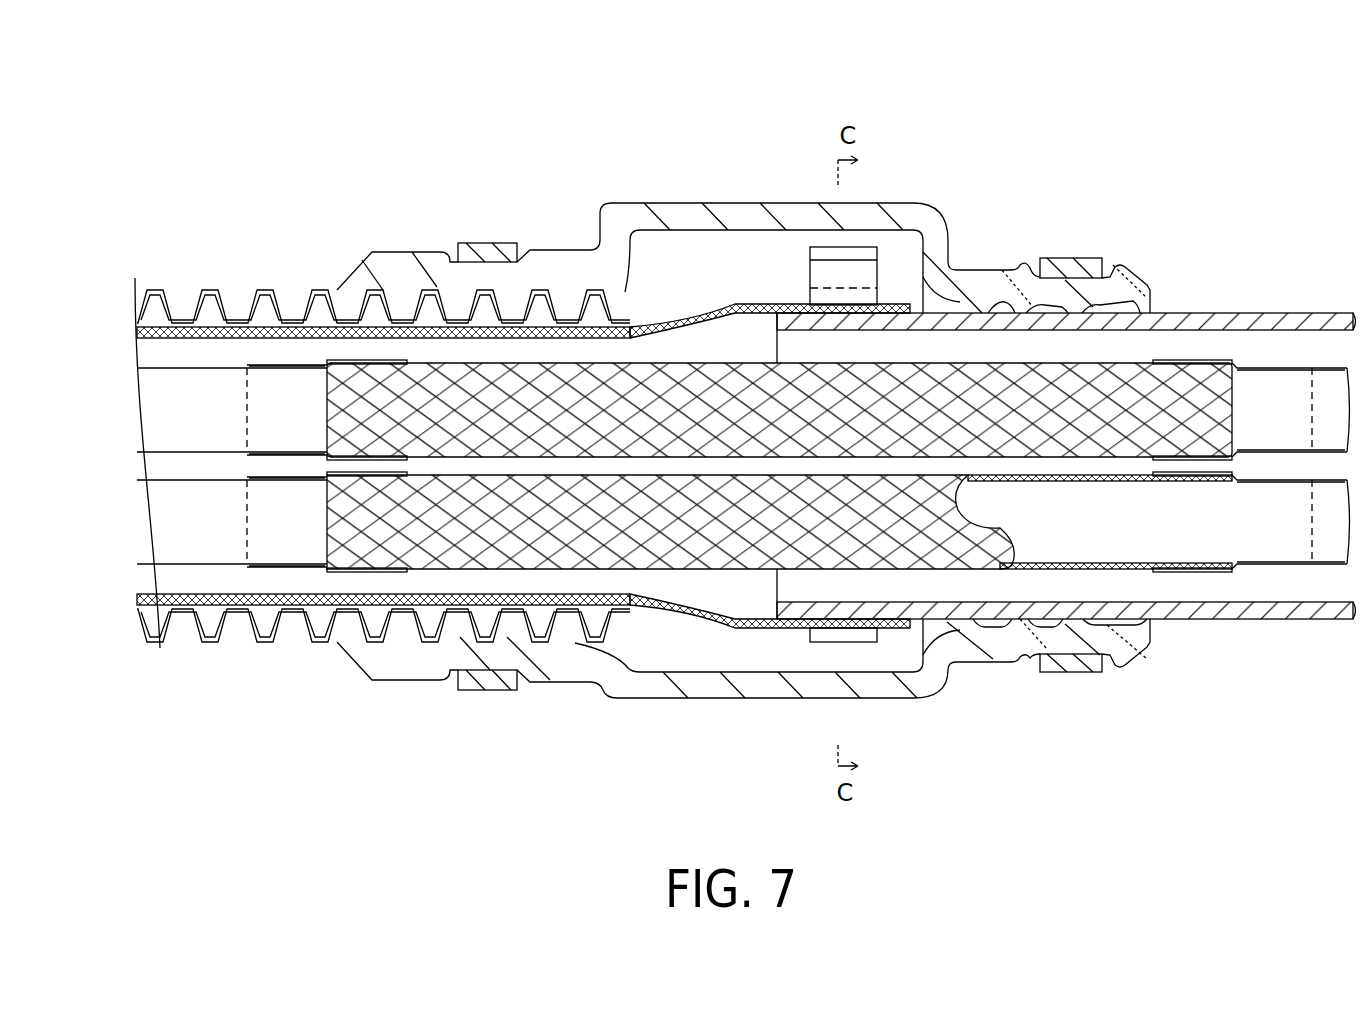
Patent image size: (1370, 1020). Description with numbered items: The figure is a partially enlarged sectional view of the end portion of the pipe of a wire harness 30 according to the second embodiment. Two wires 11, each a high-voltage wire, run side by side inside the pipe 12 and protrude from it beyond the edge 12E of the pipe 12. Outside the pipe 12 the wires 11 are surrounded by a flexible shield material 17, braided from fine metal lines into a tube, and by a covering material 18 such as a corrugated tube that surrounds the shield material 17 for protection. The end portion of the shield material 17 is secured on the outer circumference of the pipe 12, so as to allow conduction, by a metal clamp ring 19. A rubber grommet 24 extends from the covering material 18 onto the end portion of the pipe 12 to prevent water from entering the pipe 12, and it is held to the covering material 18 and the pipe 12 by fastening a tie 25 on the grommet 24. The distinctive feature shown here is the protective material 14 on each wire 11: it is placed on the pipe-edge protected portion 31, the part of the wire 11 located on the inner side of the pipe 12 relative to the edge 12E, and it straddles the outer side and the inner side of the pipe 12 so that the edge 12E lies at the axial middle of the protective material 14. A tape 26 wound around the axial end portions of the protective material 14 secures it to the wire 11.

The wire 11 is at (743, 503).
The pipe 12 is at (1210, 316).
The edge of the pipe 12E is at (766, 332).
The protective material 14 is at (710, 520).
The shield material 17 is at (408, 326).
The covering material 18 is at (266, 292).
The clamp ring 19 is at (852, 272).
The grommet 24 is at (560, 258).
The tie 25 is at (491, 680).
The tape 26 is at (287, 566).
The wire harness 30 is at (743, 428).
The pipe-edge protected portion 31 is at (721, 330).